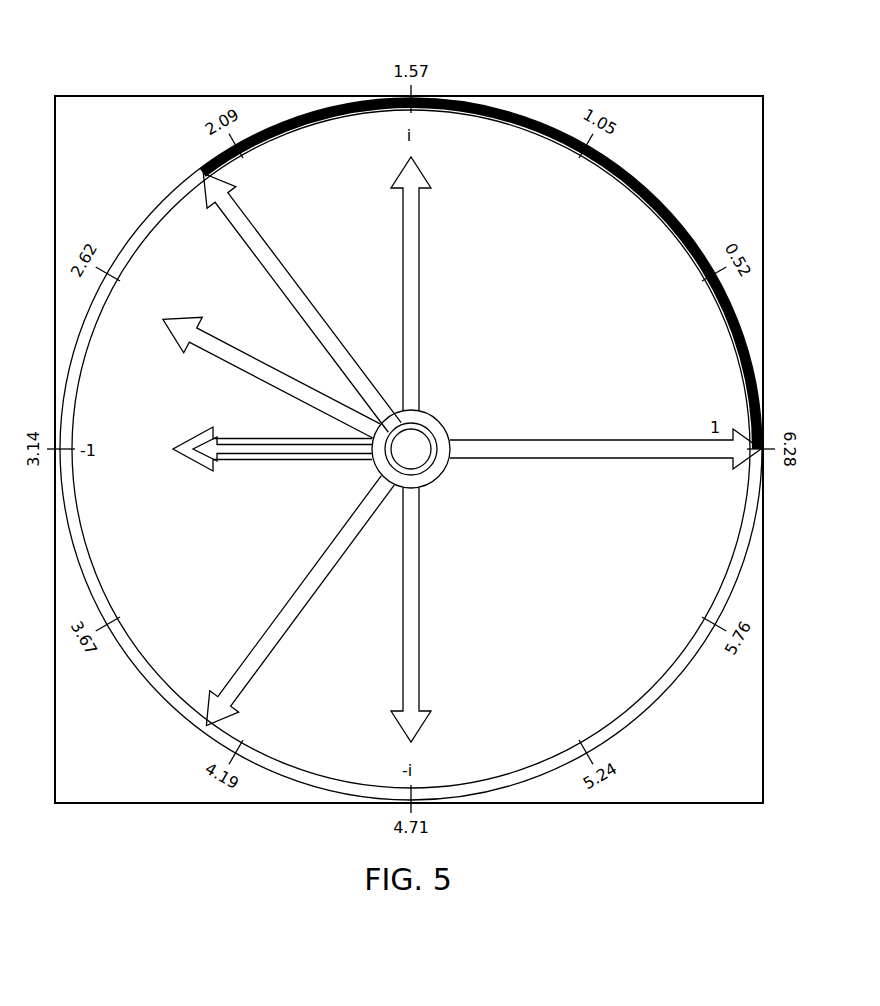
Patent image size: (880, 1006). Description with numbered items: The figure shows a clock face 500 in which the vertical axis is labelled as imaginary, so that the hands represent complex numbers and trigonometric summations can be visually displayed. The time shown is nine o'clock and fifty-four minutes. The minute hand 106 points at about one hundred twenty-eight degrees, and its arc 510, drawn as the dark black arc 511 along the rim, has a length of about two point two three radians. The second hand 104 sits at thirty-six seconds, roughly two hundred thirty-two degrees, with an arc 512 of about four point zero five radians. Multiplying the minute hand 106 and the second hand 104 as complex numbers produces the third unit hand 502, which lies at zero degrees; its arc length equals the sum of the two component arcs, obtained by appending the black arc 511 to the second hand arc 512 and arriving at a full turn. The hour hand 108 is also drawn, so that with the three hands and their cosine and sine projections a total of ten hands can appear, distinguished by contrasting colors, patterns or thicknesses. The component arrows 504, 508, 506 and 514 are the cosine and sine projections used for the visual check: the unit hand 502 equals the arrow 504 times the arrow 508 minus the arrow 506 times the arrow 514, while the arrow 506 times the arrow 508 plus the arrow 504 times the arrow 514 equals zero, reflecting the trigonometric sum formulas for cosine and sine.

The clock face 500 is at (172, 70).
The third unit hand 502 is at (643, 441).
The arrow 504 is at (315, 460).
The arrow 506 is at (419, 283).
The arrow 508 is at (242, 461).
The arc 510 is at (737, 348).
The minute hand black arc 511 is at (480, 276).
The second hand arc 512 is at (148, 662).
The arrow 514 is at (419, 592).
The second hand 104 is at (299, 612).
The minute hand 106 is at (305, 295).
The hour hand 108 is at (248, 373).